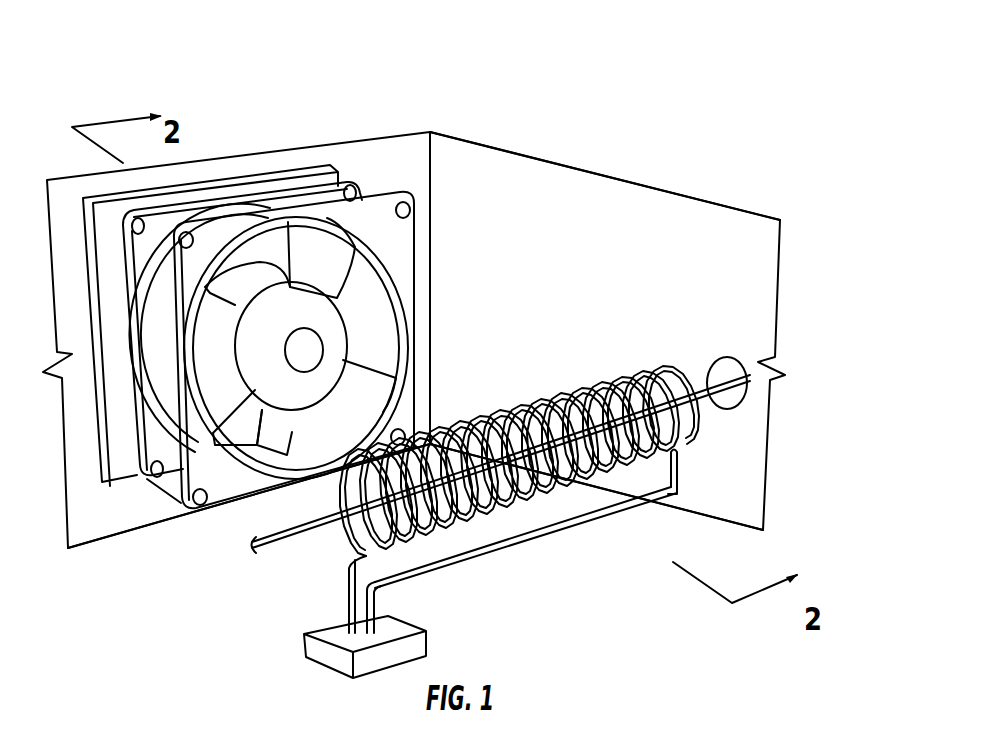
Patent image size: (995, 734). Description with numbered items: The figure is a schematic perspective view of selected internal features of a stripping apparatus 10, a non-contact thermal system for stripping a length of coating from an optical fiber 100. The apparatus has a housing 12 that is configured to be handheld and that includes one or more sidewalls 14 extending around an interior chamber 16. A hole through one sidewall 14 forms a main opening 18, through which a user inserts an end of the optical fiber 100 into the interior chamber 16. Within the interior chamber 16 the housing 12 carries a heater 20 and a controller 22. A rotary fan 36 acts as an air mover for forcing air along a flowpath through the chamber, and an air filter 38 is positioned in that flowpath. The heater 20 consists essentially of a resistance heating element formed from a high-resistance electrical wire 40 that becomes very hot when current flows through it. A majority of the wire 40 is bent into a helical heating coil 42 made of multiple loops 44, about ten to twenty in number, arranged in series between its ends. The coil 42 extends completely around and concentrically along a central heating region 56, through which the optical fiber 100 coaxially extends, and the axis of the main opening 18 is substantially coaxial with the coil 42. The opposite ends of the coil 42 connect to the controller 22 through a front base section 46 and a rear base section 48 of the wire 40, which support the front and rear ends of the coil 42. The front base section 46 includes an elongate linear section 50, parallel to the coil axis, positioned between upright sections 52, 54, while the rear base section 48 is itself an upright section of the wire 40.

The stripping apparatus 10 is at (670, 133).
The housing 12 is at (432, 126).
The sidewall 14 is at (498, 268).
The interior chamber 16 is at (500, 176).
The main opening 18 is at (718, 374).
The heater 20 is at (508, 475).
The controller 22 is at (322, 672).
The rotary fan 36 is at (398, 187).
The air filter 38 is at (221, 186).
The electrical wire 40 is at (526, 558).
The heating coil 42 is at (519, 423).
The loops 44 is at (532, 400).
The front base section 46 is at (680, 494).
The rear base section 48 is at (345, 592).
The linear section 50 is at (502, 556).
The upright section 52 is at (676, 456).
The upright section 54 is at (378, 610).
The central heating region 56 is at (336, 544).
The optical fiber 100 is at (752, 398).